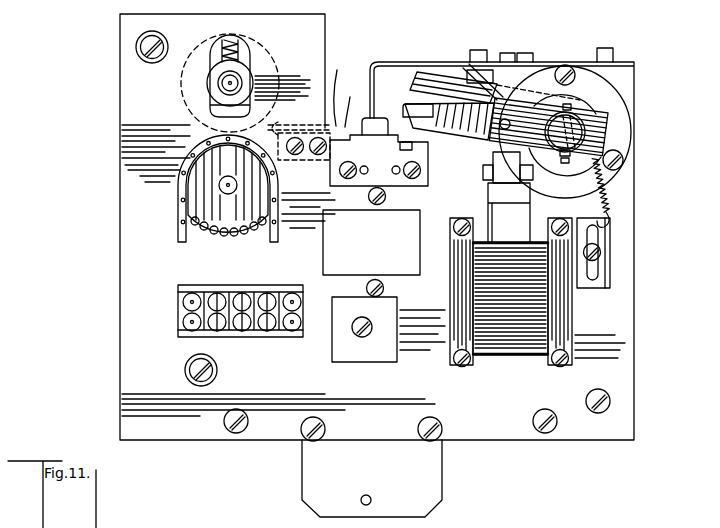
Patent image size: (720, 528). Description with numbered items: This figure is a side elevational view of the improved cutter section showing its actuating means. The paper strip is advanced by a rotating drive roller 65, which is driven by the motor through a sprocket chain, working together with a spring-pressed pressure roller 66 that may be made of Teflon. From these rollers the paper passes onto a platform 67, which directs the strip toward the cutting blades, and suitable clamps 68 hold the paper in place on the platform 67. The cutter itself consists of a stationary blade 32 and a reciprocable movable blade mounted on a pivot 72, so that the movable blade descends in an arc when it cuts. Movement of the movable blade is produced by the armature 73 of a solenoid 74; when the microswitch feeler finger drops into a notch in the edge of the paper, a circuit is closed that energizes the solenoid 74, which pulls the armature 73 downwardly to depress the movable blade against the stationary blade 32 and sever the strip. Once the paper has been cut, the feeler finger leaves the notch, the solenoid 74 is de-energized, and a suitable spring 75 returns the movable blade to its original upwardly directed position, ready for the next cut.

The stationary blade 32 is at (388, 135).
The rotating drive roller 65 is at (182, 210).
The spring-pressed pressure roller 66 is at (268, 70).
The platform 67 is at (340, 90).
The clamps 68 is at (352, 104).
The pivot 72 is at (578, 128).
The armature 73 is at (495, 216).
The solenoid 74 is at (530, 310).
The spring 75 is at (608, 200).